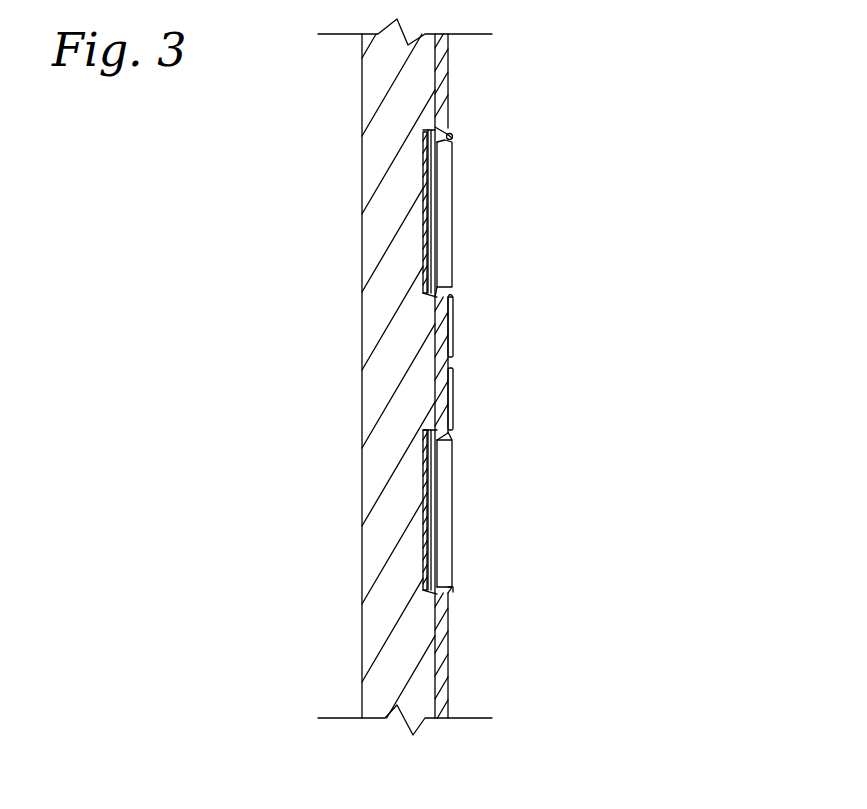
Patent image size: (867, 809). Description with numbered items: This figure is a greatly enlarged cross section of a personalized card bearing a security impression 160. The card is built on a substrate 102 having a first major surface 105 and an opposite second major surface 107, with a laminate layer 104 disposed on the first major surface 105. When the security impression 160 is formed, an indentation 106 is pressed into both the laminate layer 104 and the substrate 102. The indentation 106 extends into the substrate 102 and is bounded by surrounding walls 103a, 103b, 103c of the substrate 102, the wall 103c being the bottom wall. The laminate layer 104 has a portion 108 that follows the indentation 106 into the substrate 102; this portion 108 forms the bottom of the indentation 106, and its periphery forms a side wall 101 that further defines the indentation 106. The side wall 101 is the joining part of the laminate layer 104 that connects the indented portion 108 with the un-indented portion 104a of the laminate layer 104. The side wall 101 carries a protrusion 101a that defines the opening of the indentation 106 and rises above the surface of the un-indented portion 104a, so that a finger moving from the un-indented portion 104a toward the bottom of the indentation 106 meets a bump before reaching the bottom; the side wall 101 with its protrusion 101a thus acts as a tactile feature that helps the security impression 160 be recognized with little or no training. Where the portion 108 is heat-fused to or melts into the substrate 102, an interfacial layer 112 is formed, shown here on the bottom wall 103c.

The side wall 101 is at (448, 129).
The protrusion 101a is at (453, 136).
The substrate 102 is at (375, 613).
The surrounding wall 103a is at (431, 298).
The surrounding wall 103b is at (433, 129).
The bottom wall 103c is at (424, 243).
The laminate layer 104 is at (443, 393).
The un-indented portion 104a is at (448, 128).
The first major surface 105 is at (446, 652).
The indentation 106 is at (446, 195).
The second major surface 107 is at (362, 492).
The portion 108 is at (440, 237).
The interfacial layer 112 is at (427, 180).
The security impression 160 is at (605, 345).